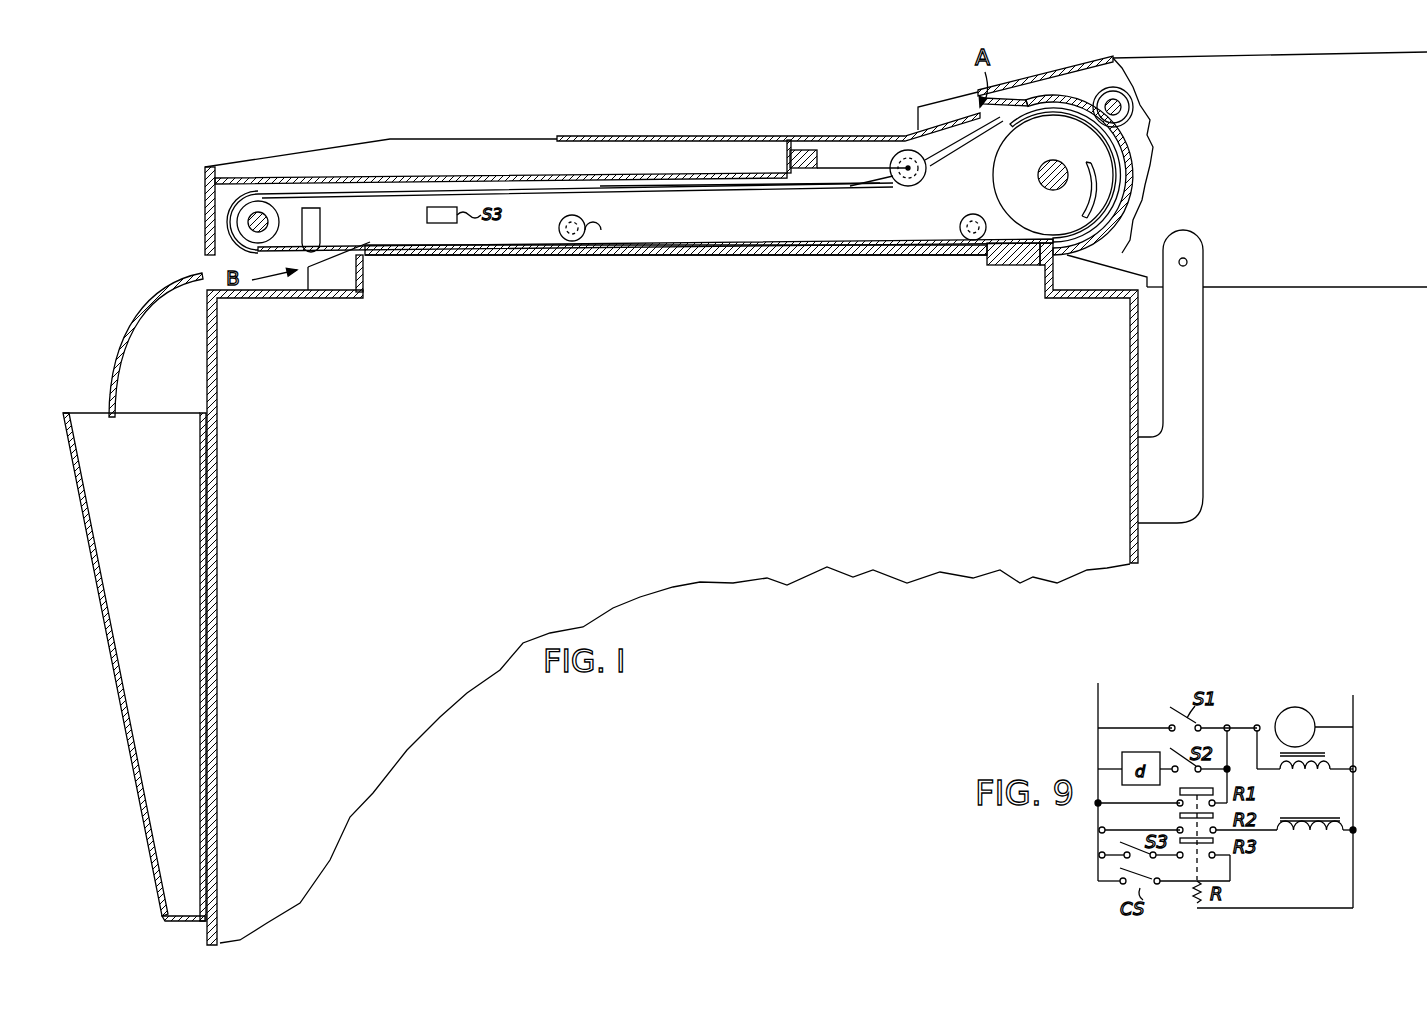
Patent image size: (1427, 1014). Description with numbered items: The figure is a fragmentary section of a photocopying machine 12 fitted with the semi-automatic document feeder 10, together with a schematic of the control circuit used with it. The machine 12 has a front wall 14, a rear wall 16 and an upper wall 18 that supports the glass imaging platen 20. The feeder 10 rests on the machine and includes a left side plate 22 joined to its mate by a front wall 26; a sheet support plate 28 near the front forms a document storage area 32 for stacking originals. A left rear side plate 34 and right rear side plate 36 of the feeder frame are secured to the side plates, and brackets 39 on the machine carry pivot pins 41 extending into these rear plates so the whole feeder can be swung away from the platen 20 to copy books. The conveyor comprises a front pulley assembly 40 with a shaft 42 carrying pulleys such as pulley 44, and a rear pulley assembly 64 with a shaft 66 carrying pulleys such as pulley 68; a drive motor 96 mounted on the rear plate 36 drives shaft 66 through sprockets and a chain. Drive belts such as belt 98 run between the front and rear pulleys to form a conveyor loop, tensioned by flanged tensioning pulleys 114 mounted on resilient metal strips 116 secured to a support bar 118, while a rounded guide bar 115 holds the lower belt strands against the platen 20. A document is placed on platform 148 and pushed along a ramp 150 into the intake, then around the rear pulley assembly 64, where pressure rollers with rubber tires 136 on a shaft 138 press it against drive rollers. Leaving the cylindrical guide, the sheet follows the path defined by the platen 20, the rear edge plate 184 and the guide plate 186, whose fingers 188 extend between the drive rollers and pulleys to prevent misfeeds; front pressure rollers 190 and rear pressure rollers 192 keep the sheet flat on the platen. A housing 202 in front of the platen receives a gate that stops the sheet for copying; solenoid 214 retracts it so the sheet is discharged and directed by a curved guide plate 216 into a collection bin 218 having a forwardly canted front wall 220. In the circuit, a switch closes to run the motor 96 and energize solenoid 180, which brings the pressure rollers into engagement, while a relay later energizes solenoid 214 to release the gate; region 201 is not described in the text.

In FIG. 1, the document feeder 10 is at (692, 105).
In FIG. 1, the photocopying machine 12 is at (1193, 555).
In FIG. 1, the front wall 14 is at (218, 540).
In FIG. 1, the rear wall 16 is at (1138, 373).
In FIG. 1, the upper wall 18 is at (1083, 298).
In FIG. 1, the glass imaging platen 20 is at (770, 250).
In FIG. 1, the left side plate 22 is at (712, 226).
In FIG. 1, the front wall 26 is at (205, 172).
In FIG. 1, the sheet support plate 28 is at (455, 178).
In FIG. 1, the document storage area 32 is at (538, 157).
In FIG. 1, the left rear side plate 34 is at (1080, 82).
In FIG. 1, the right rear side plate 36 is at (1270, 119).
In FIG. 1, the brackets 39 is at (1195, 432).
In FIG. 1, the front pulley assembly 40 is at (235, 200).
In FIG. 1, the pivot pins 41 is at (1188, 262).
In FIG. 1, the shaft 42 is at (250, 222).
In FIG. 1, the pulley 44 is at (280, 207).
In FIG. 1, the rear pulley assembly 64 is at (985, 165).
In FIG. 1, the shaft 66 is at (1060, 192).
In FIG. 1, the pulley 68 is at (990, 187).
In FIG. 9, the drive motor 96 is at (1295, 707).
In FIG. 1, the drive belt 98 is at (618, 186).
In FIG. 1, the flanged tensioning pulleys 114 is at (897, 155).
In FIG. 1, the rounded guide bar 115 is at (313, 233).
In FIG. 1, the resilient metal strips 116 is at (852, 172).
In FIG. 1, the support bar 118 is at (808, 150).
In FIG. 1, the rubber tires 136 is at (1133, 73).
In FIG. 1, the shaft 138 is at (1120, 112).
In FIG. 1, the platform 148 is at (755, 137).
In FIG. 1, the ramp 150 is at (945, 110).
In FIG. 9, the solenoid 180 is at (1300, 775).
In FIG. 1, the rear edge plate 184 is at (1012, 265).
In FIG. 1, the guide plate 186 is at (860, 245).
In FIG. 1, the fingers 188 is at (1097, 187).
In FIG. 1, the front pressure rollers 190 is at (600, 237).
In FIG. 1, the rear pressure rollers 192 is at (965, 245).
In FIG. 1, the housing interior 201 is at (335, 346).
In FIG. 1, the housing 202 is at (365, 280).
In FIG. 9, the solenoid 214 is at (1308, 838).
In FIG. 1, the curved guide plate 216 is at (140, 300).
In FIG. 1, the collection bin 218 is at (90, 420).
In FIG. 1, the forwardly canted front wall 220 is at (115, 695).